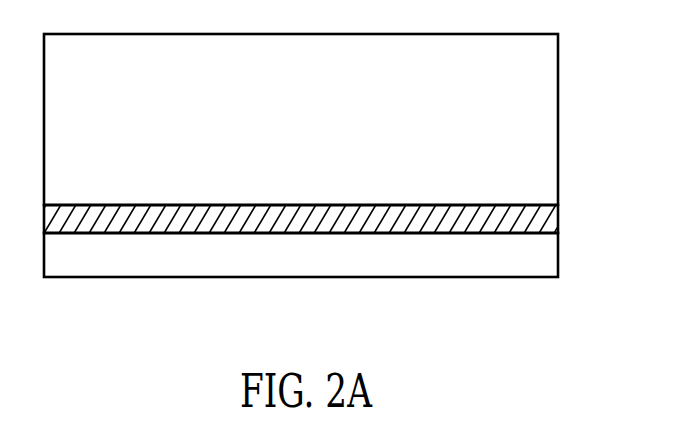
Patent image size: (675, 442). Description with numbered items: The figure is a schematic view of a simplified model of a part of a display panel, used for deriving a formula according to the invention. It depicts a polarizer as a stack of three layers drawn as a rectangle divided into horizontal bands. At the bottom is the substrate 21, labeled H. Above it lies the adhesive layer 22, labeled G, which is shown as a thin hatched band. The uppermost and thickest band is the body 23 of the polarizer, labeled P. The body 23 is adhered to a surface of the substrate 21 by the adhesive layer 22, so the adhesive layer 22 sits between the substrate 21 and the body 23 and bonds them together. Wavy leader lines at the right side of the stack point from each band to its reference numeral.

The substrate 21 is at (558, 252).
The adhesive layer 22 is at (558, 216).
The body 23 is at (558, 118).